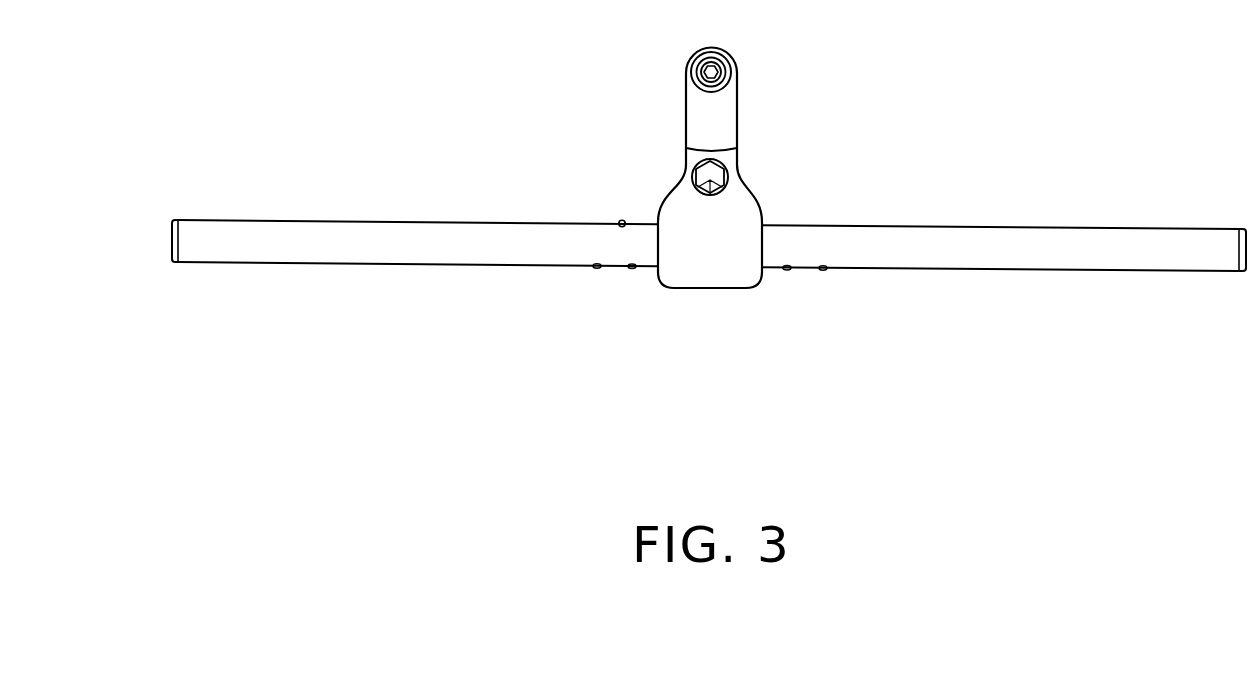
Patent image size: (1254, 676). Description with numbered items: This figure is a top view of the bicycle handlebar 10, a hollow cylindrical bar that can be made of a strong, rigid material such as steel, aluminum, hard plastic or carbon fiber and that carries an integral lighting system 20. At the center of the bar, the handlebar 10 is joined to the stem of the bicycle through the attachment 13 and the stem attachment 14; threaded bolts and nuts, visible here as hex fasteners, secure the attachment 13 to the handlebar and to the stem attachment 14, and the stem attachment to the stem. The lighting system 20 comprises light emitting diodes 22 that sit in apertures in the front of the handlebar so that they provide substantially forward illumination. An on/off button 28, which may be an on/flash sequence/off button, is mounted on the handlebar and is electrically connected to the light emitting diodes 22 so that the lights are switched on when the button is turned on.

The handlebar 10 is at (1015, 134).
The attachment 13 is at (682, 290).
The stem attachment 14 is at (737, 79).
The integral lighting system 20 is at (788, 306).
The light emitting diodes 22 is at (823, 271).
The on/off button 28 is at (622, 219).